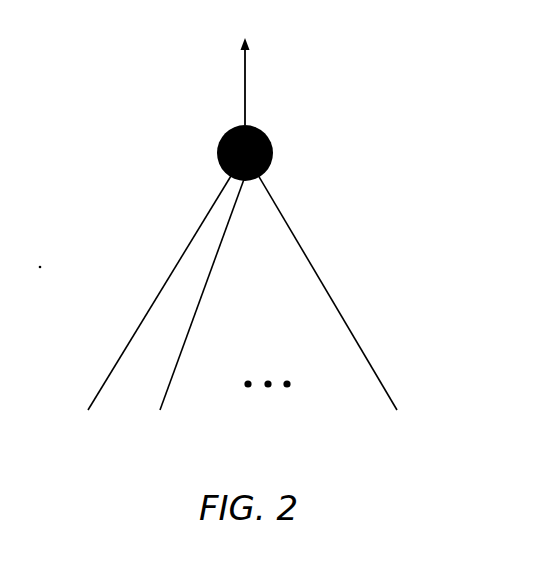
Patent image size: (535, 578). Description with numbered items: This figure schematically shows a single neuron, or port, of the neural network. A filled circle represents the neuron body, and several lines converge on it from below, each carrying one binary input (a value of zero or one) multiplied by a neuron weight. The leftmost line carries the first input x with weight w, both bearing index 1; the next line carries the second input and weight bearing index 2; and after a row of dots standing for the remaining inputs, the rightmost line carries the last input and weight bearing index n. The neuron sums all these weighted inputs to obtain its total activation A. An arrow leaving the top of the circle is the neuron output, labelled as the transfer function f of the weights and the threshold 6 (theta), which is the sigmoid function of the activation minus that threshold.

The first input and weight 1 is at (158, 299).
The second input and weight 2 is at (199, 303).
The n-th input and weight n is at (329, 299).
The threshold value 6 is at (288, 81).